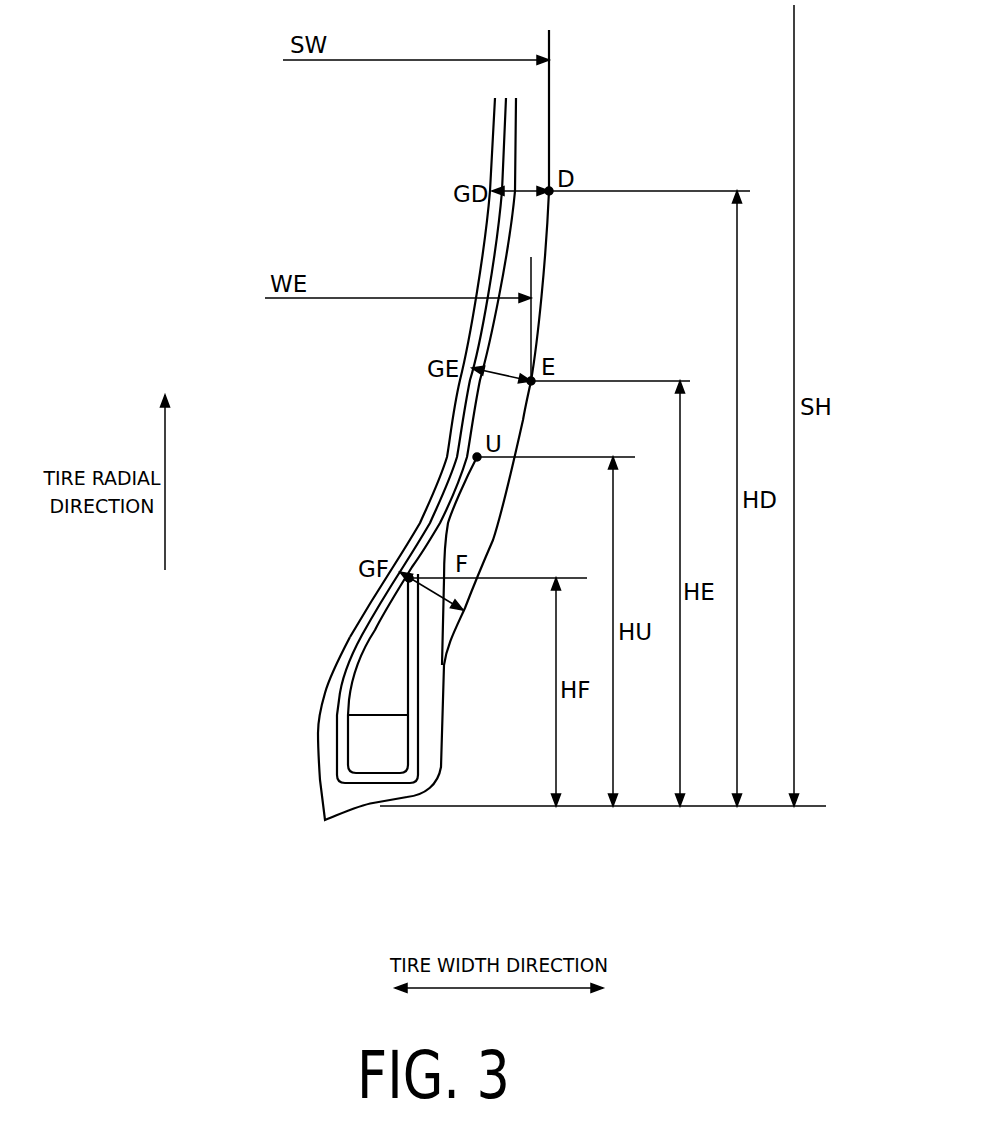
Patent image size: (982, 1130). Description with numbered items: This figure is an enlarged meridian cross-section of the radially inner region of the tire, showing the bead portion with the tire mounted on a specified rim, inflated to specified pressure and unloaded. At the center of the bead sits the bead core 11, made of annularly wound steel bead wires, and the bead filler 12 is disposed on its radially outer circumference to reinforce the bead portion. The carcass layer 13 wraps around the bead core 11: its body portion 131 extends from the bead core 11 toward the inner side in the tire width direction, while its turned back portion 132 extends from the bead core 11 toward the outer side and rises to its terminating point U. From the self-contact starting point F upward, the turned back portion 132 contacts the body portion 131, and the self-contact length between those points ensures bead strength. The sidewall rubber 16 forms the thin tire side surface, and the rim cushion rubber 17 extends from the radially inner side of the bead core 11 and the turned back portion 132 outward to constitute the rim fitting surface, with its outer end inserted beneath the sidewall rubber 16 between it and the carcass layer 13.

The bead core 11 is at (362, 748).
The bead filler 12 is at (370, 675).
The carcass layer 13 is at (384, 440).
The body portion 131 is at (438, 498).
The turned back portion 132 is at (437, 528).
The sidewall rubber 16 is at (551, 114).
The rim cushion rubber 17 is at (324, 798).